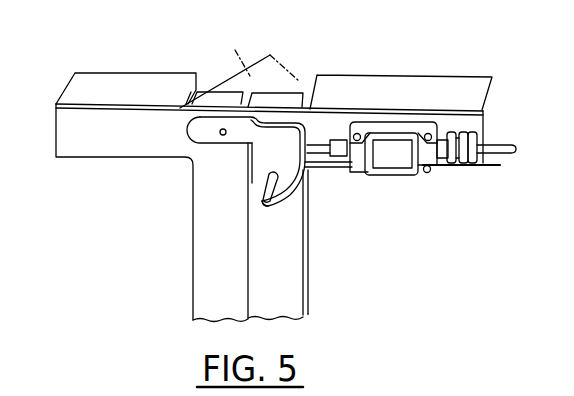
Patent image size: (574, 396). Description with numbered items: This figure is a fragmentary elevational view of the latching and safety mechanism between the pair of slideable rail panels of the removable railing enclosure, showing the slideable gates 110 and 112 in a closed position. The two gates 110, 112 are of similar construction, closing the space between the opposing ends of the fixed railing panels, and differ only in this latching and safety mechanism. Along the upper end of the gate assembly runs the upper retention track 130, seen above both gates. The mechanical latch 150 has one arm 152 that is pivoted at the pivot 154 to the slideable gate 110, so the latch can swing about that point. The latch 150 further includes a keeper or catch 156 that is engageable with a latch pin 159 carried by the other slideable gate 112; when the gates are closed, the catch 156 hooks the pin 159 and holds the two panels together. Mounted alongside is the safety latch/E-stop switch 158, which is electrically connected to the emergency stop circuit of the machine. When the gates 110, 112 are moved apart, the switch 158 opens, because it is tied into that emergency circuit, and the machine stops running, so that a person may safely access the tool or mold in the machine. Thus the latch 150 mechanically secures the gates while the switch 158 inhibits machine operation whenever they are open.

The slideable rail panel 110 is at (87, 152).
The slideable rail panel 112 is at (300, 275).
The upper retention track 130 is at (102, 83).
The mechanical latch 150 is at (252, 163).
The arm 152 is at (227, 118).
The pivot 154 is at (219, 132).
The keeper or catch 156 is at (279, 195).
The safety latch/E-stop switch 158 is at (385, 208).
The latch pin 159 is at (265, 188).